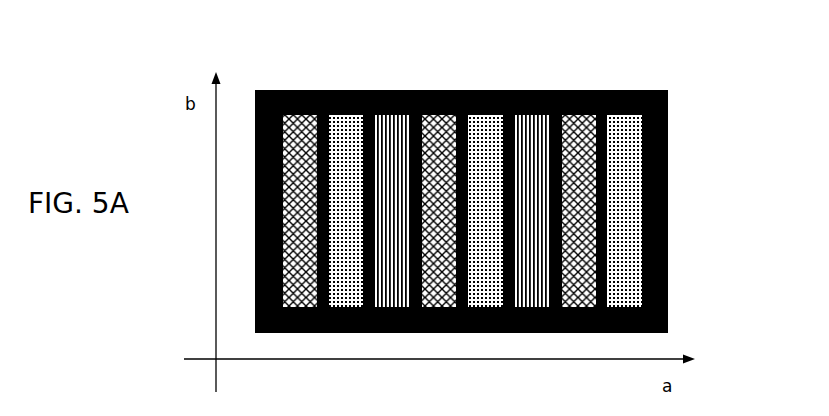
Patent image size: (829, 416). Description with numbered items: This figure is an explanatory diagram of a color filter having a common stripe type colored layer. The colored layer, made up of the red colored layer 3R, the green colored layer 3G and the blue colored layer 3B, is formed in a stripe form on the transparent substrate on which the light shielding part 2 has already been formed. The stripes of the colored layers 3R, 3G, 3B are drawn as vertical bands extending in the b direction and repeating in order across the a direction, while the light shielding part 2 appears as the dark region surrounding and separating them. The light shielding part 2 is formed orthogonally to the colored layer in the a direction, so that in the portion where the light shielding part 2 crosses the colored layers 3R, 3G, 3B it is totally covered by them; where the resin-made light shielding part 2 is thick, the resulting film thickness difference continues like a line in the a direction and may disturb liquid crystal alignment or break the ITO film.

The light shielding part 2 is at (668, 208).
The red colored layer 3R is at (290, 135).
The green colored layer 3G is at (350, 143).
The blue colored layer 3B is at (390, 143).